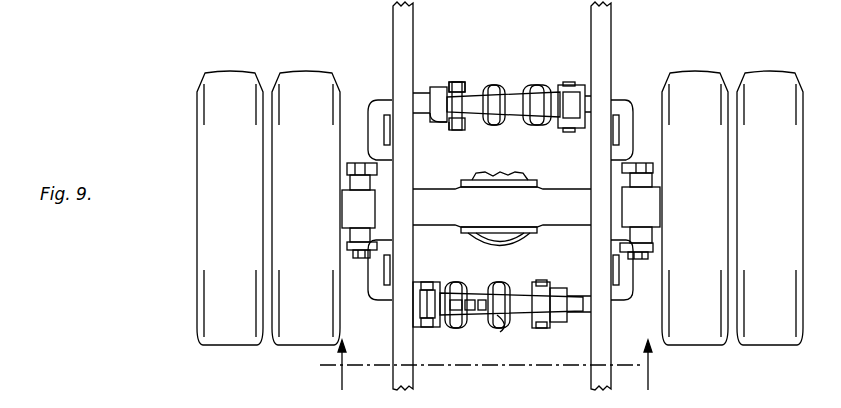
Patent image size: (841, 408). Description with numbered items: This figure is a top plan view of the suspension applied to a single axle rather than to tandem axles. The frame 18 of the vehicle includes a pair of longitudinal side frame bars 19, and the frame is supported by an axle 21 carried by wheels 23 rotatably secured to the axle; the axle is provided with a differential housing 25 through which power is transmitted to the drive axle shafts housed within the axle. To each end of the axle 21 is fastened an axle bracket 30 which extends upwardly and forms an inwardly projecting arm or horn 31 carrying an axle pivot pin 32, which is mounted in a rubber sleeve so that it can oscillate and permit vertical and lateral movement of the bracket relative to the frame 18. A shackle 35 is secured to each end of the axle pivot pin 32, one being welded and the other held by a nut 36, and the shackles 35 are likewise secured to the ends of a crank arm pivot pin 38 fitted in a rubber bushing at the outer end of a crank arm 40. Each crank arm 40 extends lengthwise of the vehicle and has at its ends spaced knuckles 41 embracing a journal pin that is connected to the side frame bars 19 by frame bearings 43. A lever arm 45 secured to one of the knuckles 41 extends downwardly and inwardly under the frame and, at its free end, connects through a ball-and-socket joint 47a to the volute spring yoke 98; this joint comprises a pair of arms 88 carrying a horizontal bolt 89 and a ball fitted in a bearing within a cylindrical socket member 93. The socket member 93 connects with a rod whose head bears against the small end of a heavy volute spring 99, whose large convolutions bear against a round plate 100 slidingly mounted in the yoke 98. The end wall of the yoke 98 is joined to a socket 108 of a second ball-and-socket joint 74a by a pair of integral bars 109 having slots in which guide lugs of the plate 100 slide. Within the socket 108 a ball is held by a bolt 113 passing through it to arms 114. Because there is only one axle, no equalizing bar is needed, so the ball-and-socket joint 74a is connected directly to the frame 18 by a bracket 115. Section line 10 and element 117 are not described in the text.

The frame 18 is at (411, 27).
The longitudinal side frame bars 19 is at (613, 22).
The wheels 23 is at (500, 208).
The axle 21 is at (502, 207).
The differential housing 25 is at (498, 250).
The axle bracket 30 is at (655, 206).
The arm or horn 31 is at (360, 208).
The axle pivot pin 32 is at (636, 165).
The shackle 35 is at (350, 168).
The nut 36 is at (650, 254).
The crank arm pivot pin 38 is at (352, 254).
The crank arm 40 is at (626, 110).
The knuckles 41 is at (378, 262).
The frame bearings 43 is at (386, 102).
The lever arm 45 is at (592, 92).
The ball-and-socket joint 47a is at (570, 134).
The ball-and-socket joint 74a is at (457, 72).
The arms 88 is at (447, 292).
The horizontal bolt 89 is at (426, 283).
The socket member 93 is at (430, 318).
The yoke 98 is at (550, 74).
The volute spring 99 is at (506, 320).
The round plate 100 is at (474, 292).
The socket 108 is at (442, 125).
The integral bars 109 is at (503, 104).
The bolt 113 is at (455, 130).
The arms 114 is at (462, 88).
The bracket 115 is at (425, 100).
The clamp bracket 117 is at (540, 282).
The section line 10 is at (491, 368).